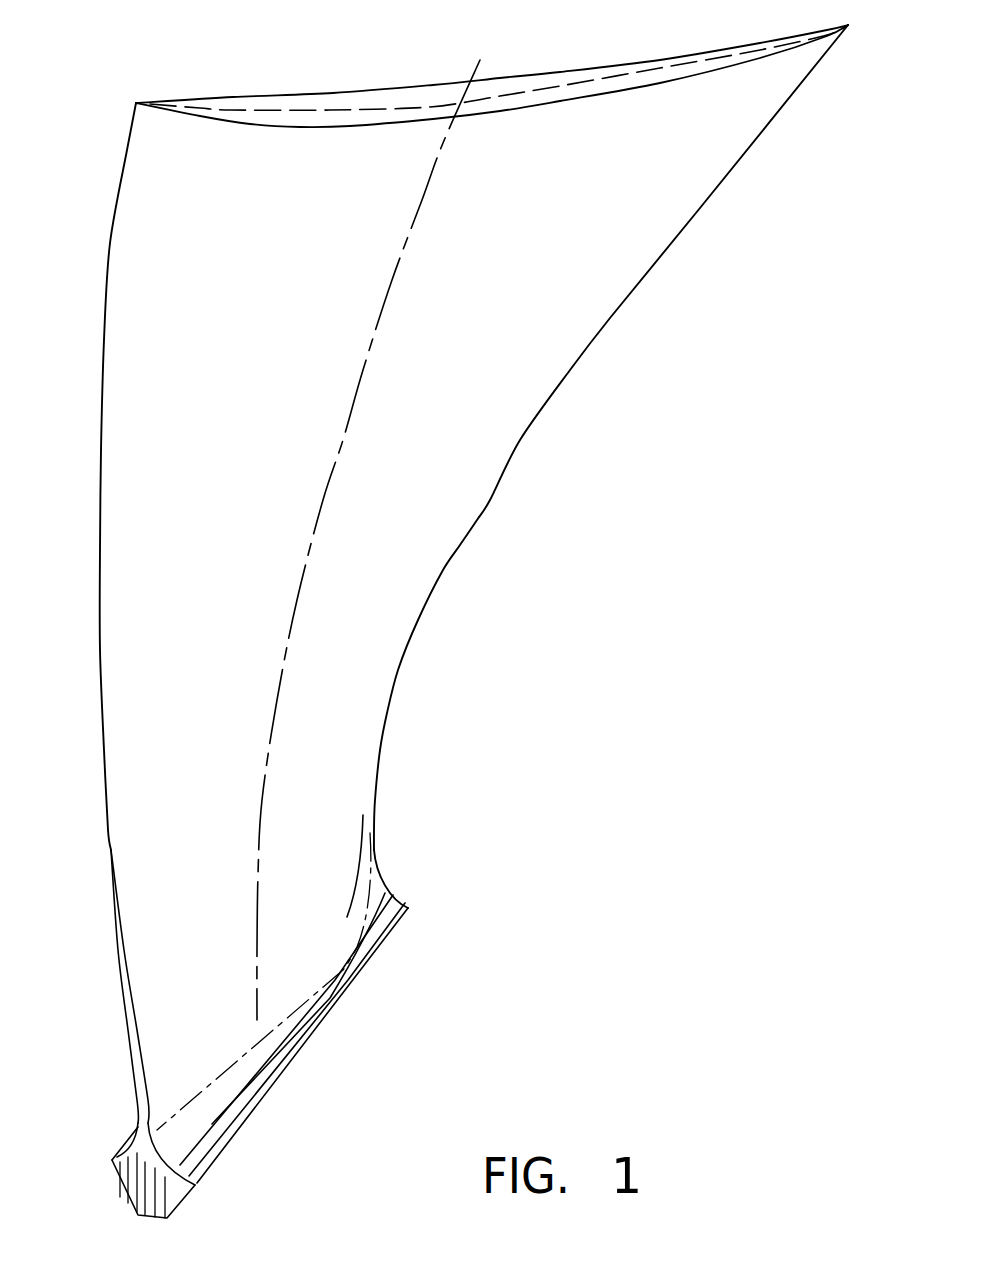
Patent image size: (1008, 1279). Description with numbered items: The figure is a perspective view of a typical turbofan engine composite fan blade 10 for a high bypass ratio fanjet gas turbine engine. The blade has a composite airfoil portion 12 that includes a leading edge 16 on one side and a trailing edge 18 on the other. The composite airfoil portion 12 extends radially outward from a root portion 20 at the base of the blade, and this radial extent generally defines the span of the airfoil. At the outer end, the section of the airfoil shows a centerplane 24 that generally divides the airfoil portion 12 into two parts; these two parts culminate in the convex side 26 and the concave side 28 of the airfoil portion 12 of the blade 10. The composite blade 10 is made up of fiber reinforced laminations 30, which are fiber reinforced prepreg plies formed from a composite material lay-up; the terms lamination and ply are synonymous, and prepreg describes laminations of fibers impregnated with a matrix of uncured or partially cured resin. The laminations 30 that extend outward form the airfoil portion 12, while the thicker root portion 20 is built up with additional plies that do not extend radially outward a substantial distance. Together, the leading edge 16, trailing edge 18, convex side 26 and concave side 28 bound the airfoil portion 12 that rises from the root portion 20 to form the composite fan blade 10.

The composite fan blade 10 is at (462, 609).
The composite airfoil portion 12 is at (440, 574).
The leading edge 16 is at (110, 243).
The trailing edge 18 is at (650, 263).
The root portion 20 is at (257, 1110).
The centerplane 24 is at (604, 80).
The convex side 26 is at (514, 77).
The concave side 28 is at (521, 78).
The fiber reinforced laminations 30 is at (492, 63).